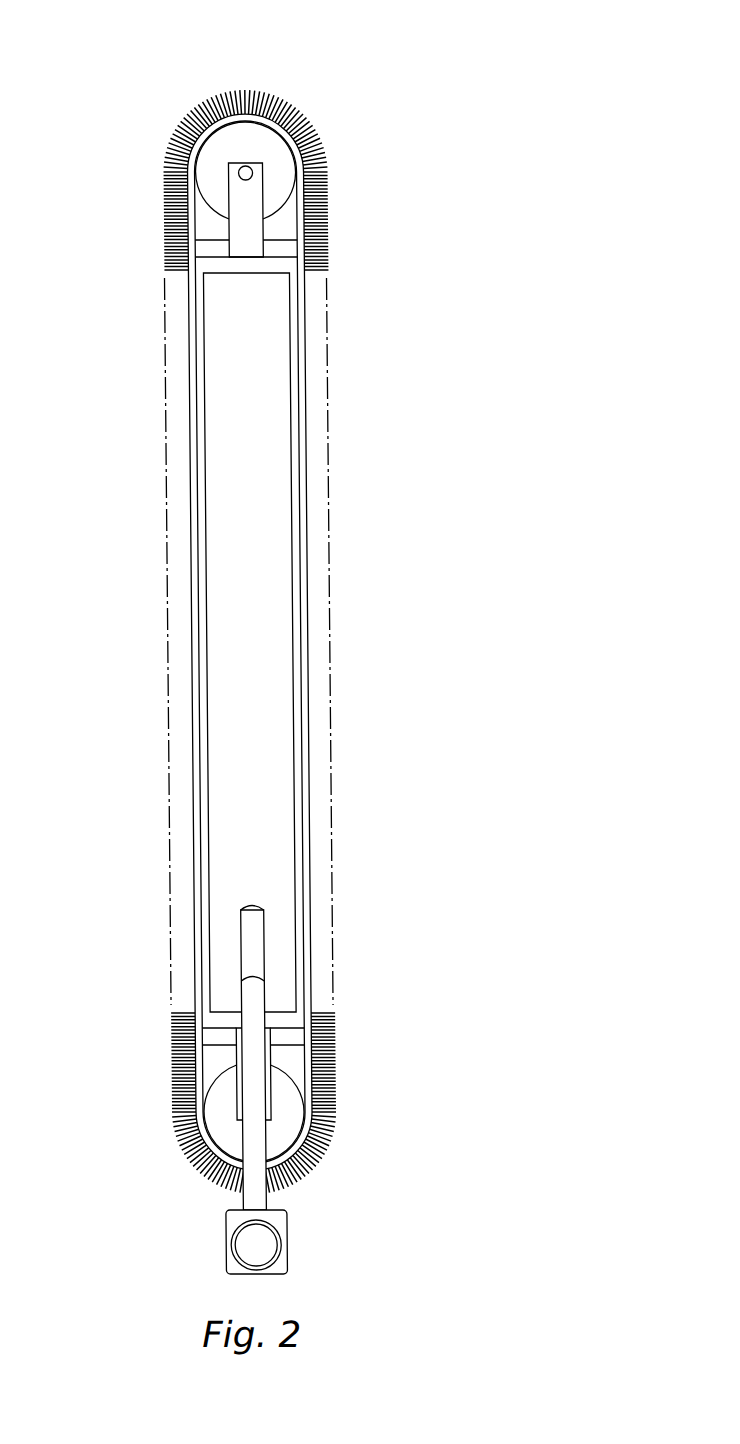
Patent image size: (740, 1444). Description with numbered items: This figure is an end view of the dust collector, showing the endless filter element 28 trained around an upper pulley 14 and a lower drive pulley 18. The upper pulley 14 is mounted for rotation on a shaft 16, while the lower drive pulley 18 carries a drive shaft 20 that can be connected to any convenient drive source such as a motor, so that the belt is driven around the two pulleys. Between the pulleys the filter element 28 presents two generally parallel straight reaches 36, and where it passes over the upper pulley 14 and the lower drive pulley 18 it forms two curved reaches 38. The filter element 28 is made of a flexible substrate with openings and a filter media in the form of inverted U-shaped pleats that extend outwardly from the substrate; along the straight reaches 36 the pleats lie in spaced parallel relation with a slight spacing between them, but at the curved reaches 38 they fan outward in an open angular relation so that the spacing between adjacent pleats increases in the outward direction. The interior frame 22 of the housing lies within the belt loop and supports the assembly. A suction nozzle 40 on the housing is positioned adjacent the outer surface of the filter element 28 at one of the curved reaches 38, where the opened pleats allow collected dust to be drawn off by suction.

The upper pulley 14 is at (280, 176).
The shaft 16 is at (257, 172).
The lower drive pulley 18 is at (278, 1102).
The drive shaft 20 is at (236, 1112).
The interior frame 22 is at (302, 945).
The filter element 28 is at (337, 1030).
The straight reaches 36 is at (163, 552).
The curved reaches 38 is at (226, 93).
The suction nozzle 40 is at (251, 1245).